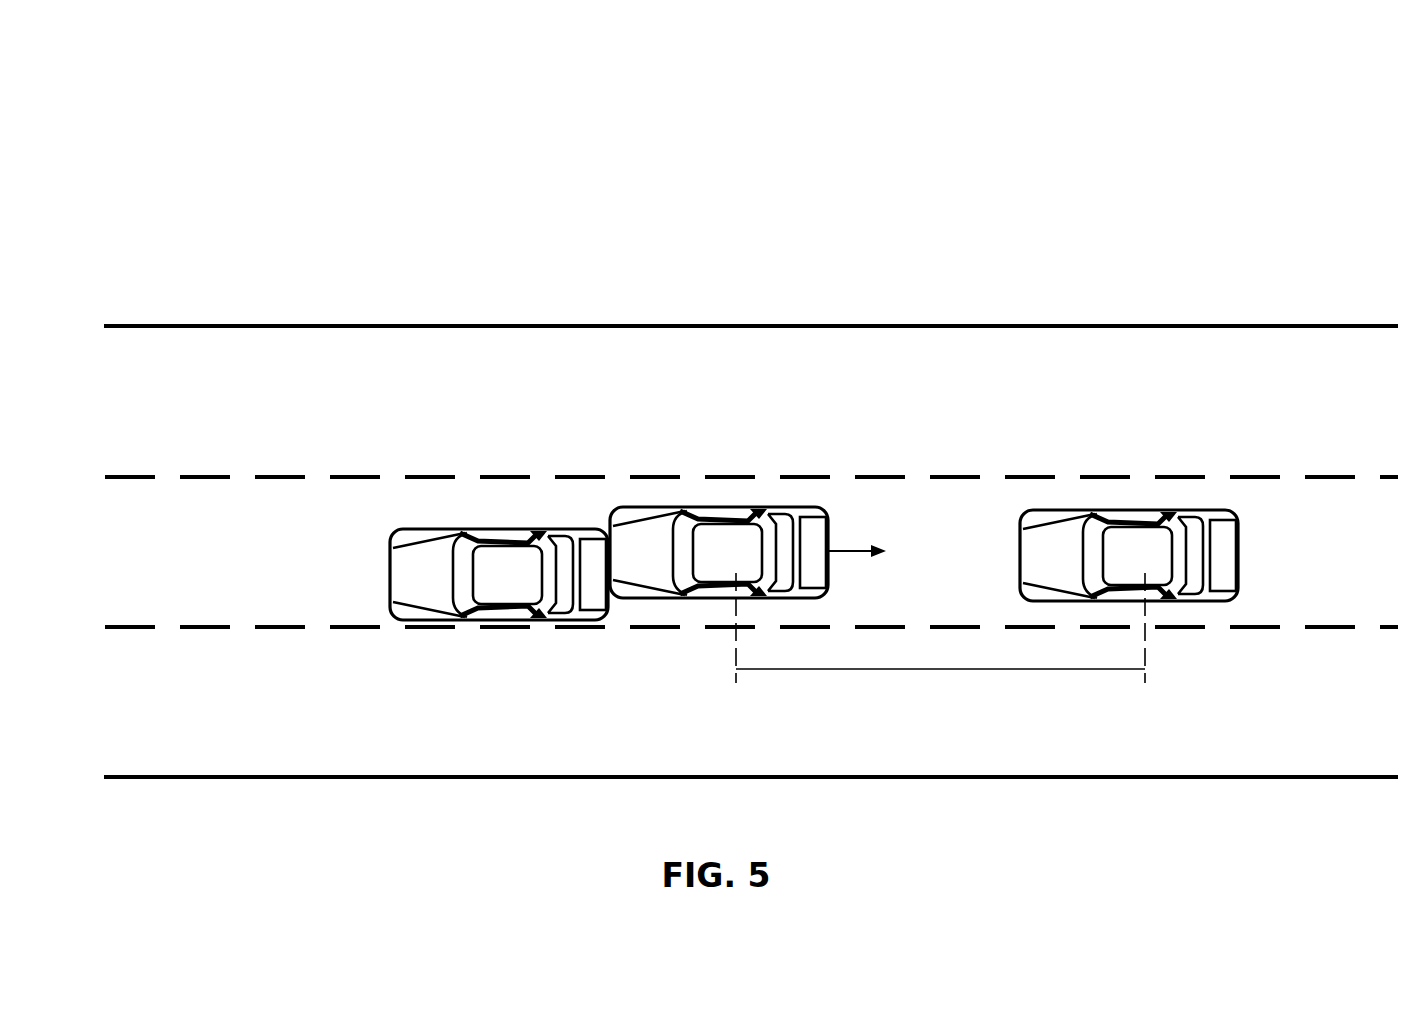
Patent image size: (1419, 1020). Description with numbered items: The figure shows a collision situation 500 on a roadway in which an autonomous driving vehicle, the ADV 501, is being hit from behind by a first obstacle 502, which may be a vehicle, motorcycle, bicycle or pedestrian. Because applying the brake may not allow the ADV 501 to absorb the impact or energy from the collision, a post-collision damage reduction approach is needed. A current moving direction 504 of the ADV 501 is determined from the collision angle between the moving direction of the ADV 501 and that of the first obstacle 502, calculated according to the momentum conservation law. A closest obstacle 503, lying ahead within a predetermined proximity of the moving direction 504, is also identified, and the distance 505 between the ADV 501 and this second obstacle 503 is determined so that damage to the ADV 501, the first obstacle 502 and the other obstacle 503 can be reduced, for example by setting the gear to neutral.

The situation 500 is at (751, 416).
The ADV 501 is at (710, 567).
The first obstacle 502 is at (495, 580).
The closest obstacle 503 is at (1126, 569).
The current moving direction 504 is at (853, 543).
The distance 505 is at (937, 669).